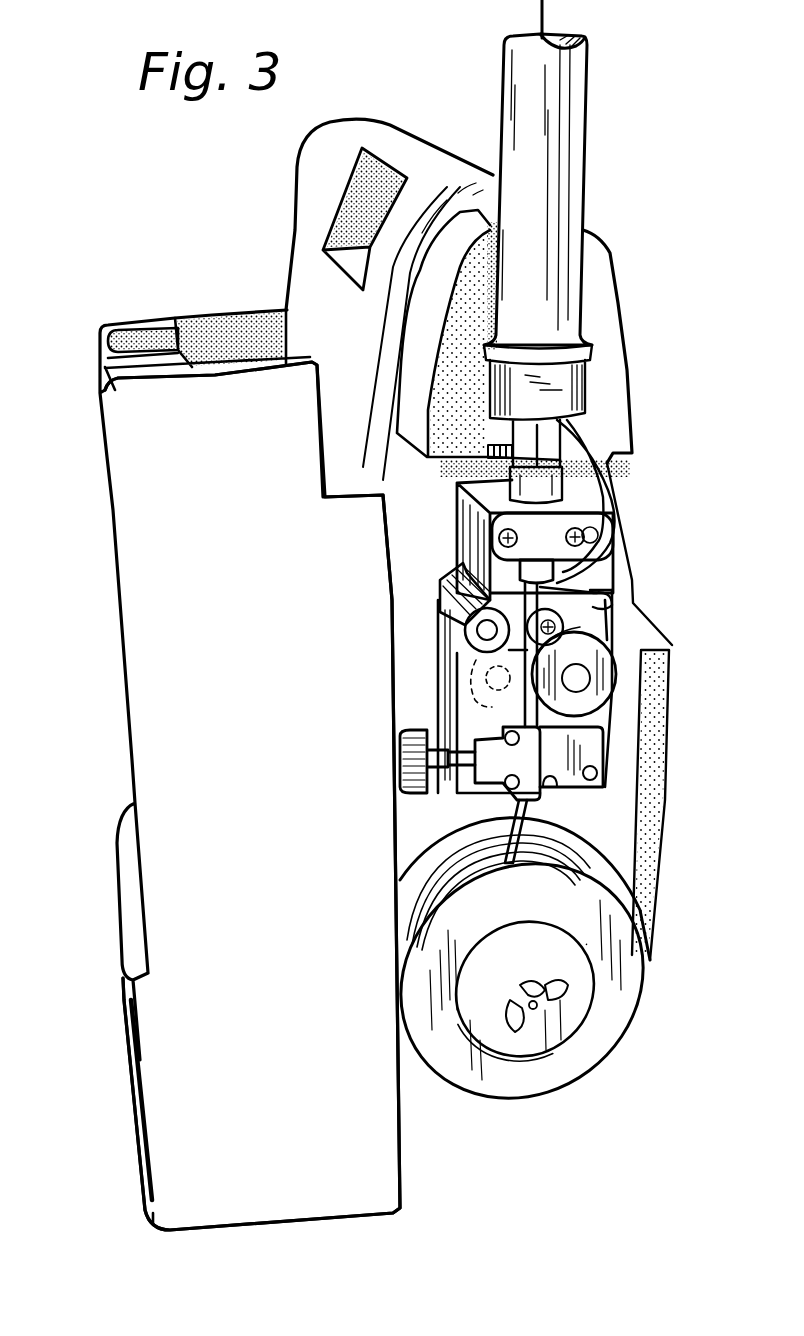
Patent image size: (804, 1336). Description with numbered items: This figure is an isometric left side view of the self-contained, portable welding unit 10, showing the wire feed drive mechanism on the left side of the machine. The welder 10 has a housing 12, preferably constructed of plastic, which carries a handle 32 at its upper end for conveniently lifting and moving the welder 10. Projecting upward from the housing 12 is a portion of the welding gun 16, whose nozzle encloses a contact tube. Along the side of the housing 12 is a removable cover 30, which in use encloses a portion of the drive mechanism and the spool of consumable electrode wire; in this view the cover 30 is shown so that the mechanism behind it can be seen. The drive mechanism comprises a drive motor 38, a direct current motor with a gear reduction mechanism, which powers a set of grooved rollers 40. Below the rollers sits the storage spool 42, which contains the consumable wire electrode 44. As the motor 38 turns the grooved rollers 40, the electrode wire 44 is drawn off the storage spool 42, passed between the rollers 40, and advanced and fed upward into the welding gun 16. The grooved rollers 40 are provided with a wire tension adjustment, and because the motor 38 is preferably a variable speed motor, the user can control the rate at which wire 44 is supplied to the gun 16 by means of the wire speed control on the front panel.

The welding unit 10 is at (103, 490).
The housing 12 is at (290, 243).
The welding gun 16 is at (552, 172).
The removable cover 30 is at (242, 1215).
The handle 32 is at (377, 155).
The drive motor 38 is at (597, 743).
The grooved rollers 40 is at (550, 733).
The storage spool 42 is at (627, 987).
The consumable wire electrode 44 is at (533, 843).